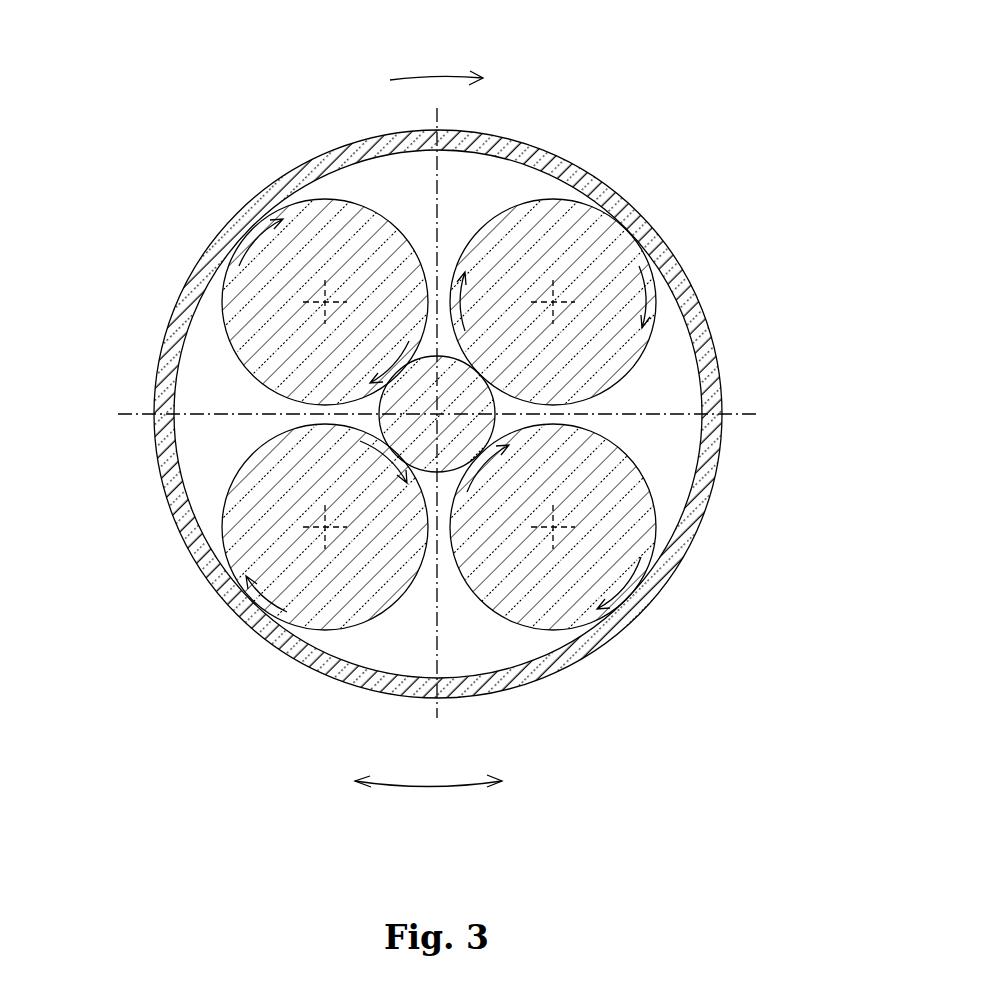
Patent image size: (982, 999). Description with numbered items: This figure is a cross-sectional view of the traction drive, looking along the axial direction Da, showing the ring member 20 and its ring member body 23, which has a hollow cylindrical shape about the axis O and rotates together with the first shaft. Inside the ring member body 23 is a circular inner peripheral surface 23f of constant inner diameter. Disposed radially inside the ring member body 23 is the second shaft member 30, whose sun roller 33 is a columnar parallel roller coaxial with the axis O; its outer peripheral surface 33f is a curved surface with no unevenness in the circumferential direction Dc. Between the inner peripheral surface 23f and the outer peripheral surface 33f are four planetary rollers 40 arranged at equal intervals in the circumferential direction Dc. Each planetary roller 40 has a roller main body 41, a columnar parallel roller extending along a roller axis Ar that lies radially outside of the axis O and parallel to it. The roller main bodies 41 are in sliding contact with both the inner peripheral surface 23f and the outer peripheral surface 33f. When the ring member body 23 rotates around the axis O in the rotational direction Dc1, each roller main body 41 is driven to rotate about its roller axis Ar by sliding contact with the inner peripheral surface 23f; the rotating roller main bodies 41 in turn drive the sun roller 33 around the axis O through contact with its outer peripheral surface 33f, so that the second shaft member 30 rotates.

The casing 20 is at (438, 355).
The ring member body 23 is at (483, 134).
The inner peripheral surface 23f is at (495, 180).
The second shaft member 30 is at (522, 557).
The sun roller 33 is at (480, 452).
The outer peripheral surface 33f is at (455, 462).
The planetary roller 40 is at (367, 185).
The roller main body 41 is at (347, 201).
The roller axis Ar is at (325, 302).
The axis O is at (437, 414).
The axial direction Da is at (483, 413).
The circumferential direction Dc is at (428, 800).
The first circumferential direction Dc1 is at (438, 74).